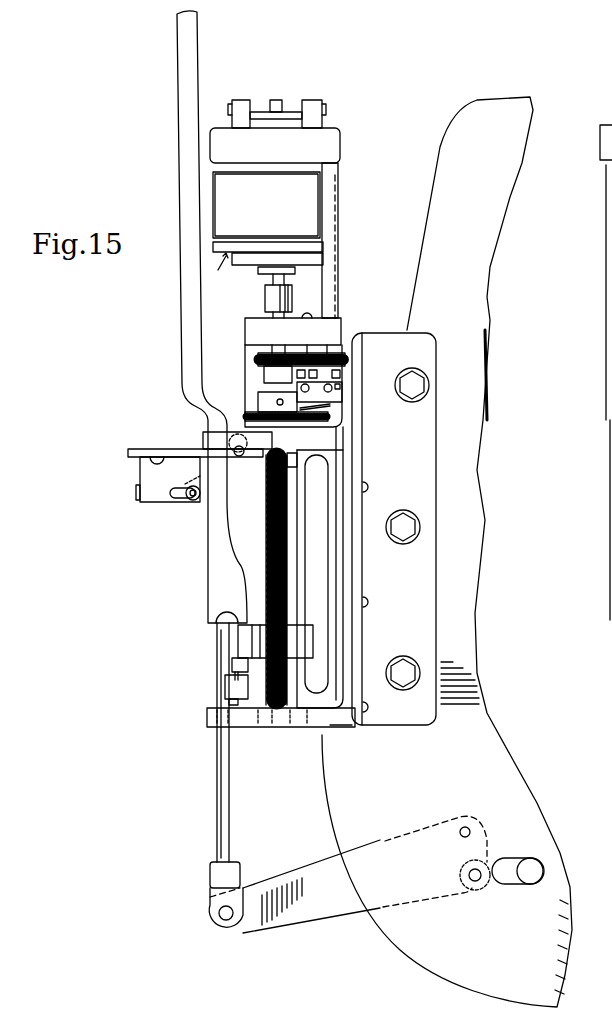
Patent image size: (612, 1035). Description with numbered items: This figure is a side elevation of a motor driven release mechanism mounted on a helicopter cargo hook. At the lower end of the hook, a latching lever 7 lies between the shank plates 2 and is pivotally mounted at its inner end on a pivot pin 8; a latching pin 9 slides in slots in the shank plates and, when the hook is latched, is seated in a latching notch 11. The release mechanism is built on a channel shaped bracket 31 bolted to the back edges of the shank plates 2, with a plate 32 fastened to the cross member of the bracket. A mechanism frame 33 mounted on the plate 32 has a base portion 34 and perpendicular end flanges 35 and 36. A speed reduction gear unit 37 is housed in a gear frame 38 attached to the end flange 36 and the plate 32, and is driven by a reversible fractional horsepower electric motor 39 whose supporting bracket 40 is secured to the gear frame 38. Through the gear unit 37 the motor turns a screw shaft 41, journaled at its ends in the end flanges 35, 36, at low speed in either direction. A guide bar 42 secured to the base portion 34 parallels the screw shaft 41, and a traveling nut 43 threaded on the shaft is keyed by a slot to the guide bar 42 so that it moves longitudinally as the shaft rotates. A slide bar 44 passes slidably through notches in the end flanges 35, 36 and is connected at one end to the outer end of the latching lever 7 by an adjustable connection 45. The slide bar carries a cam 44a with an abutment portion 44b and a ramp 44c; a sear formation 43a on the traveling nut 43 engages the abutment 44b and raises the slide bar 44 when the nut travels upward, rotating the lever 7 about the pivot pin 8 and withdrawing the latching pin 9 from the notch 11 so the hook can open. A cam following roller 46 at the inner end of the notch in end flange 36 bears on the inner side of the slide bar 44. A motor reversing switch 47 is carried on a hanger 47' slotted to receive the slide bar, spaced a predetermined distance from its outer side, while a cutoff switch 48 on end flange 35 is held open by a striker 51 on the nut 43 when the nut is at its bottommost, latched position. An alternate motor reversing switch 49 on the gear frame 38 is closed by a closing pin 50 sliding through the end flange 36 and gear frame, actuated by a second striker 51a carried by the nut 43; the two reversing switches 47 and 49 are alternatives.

The shank plates 2 is at (392, 932).
The latching lever 7 is at (332, 908).
The pivot pin 8 is at (468, 828).
The latching pin 9 is at (527, 877).
The latching notch 11 is at (535, 860).
The channel shaped bracket 31 is at (417, 413).
The plate 32 is at (363, 727).
The mechanism frame 33 is at (209, 738).
The base portion 34 is at (348, 627).
The end flange 35 is at (315, 728).
The end flange 36 is at (245, 418).
The speed reduction gear unit 37 is at (253, 381).
The gear frame 38 is at (246, 339).
The electric motor 39 is at (275, 209).
The supporting bracket 40 is at (245, 323).
The screw shaft 41 is at (266, 513).
The guide bar 42 is at (318, 578).
The traveling nut 43 is at (313, 640).
The sear formation 43a is at (245, 635).
The slide bar 44 is at (177, 82).
The cam 44a is at (200, 597).
The abutment portion 44b is at (216, 614).
The ramp 44c is at (232, 544).
The adjustable connection 45 is at (212, 921).
The cam following roller 46 is at (242, 457).
The motor reversing switch 47 is at (149, 479).
The hanger 47' is at (200, 442).
The cutoff switch 48 is at (225, 687).
The alternate motor reversing switch 49 is at (343, 388).
The closing pin 50 is at (292, 452).
The striker 51 is at (245, 658).
The second striker 51a is at (300, 607).